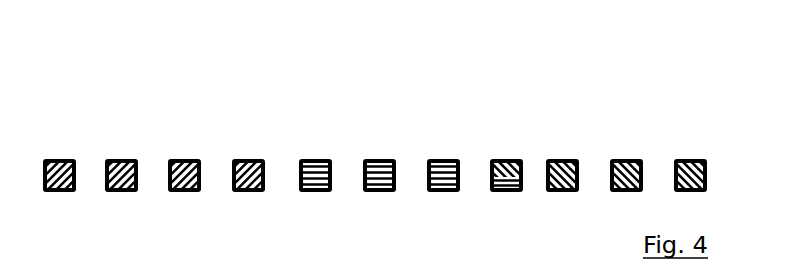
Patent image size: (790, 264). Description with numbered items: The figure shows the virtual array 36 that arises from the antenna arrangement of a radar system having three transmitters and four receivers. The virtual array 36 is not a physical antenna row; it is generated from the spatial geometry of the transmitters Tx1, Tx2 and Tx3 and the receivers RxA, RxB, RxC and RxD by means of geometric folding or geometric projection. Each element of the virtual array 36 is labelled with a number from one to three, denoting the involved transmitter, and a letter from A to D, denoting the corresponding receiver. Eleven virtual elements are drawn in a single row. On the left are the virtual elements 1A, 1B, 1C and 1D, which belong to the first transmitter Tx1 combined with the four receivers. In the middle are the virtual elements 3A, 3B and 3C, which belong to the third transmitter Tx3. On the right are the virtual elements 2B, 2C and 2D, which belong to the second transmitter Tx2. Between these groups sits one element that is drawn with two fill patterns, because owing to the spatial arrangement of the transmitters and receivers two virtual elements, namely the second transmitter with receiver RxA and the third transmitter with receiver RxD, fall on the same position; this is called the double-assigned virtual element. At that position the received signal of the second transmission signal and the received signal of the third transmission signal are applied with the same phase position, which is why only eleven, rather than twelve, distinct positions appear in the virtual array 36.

The virtual array 36 is at (116, 69).
The virtual element 1A is at (58, 156).
The virtual element 1B is at (120, 156).
The virtual element 1C is at (183, 156).
The virtual element 1D is at (243, 156).
The virtual element 3A is at (318, 193).
The virtual element 3B is at (382, 193).
The virtual element 3C is at (443, 193).
The virtual element 2B is at (572, 157).
The virtual element 2C is at (635, 157).
The virtual element 2D is at (695, 157).